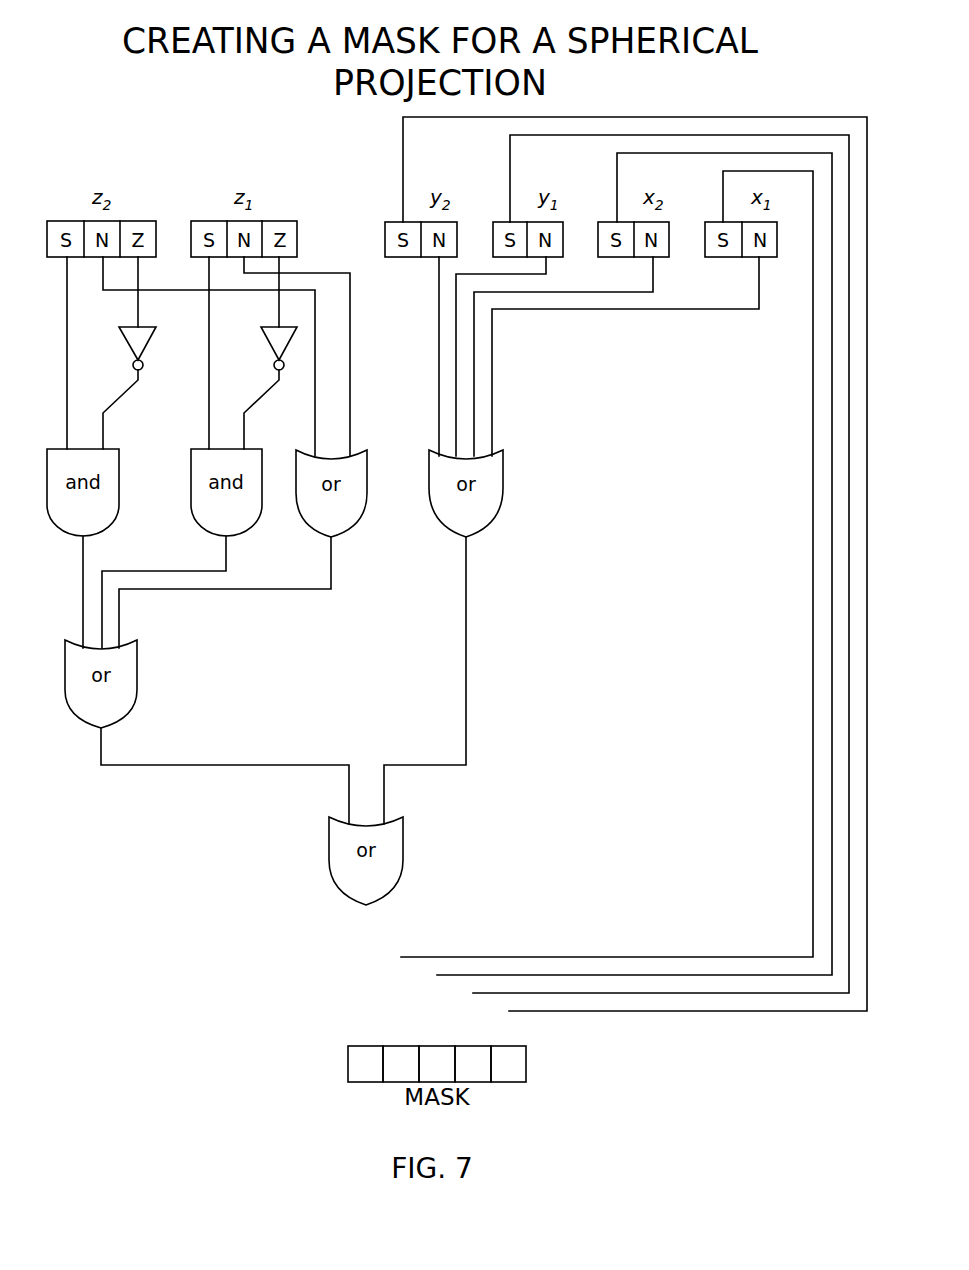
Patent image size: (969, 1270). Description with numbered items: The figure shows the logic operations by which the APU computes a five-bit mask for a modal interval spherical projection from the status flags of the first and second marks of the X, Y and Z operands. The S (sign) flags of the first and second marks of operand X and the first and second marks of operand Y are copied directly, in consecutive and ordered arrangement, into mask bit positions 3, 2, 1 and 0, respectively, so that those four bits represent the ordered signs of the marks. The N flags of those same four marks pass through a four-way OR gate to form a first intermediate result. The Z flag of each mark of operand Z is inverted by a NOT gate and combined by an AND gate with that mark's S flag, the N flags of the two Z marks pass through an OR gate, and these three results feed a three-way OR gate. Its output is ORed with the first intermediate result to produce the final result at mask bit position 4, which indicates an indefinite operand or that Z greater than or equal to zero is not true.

The mask bit position 4 is at (366, 905).
The mask bit position 3 is at (401, 957).
The mask bit position 2 is at (437, 975).
The mask bit position 1 is at (473, 993).
The mask bit position 0 is at (509, 1011).